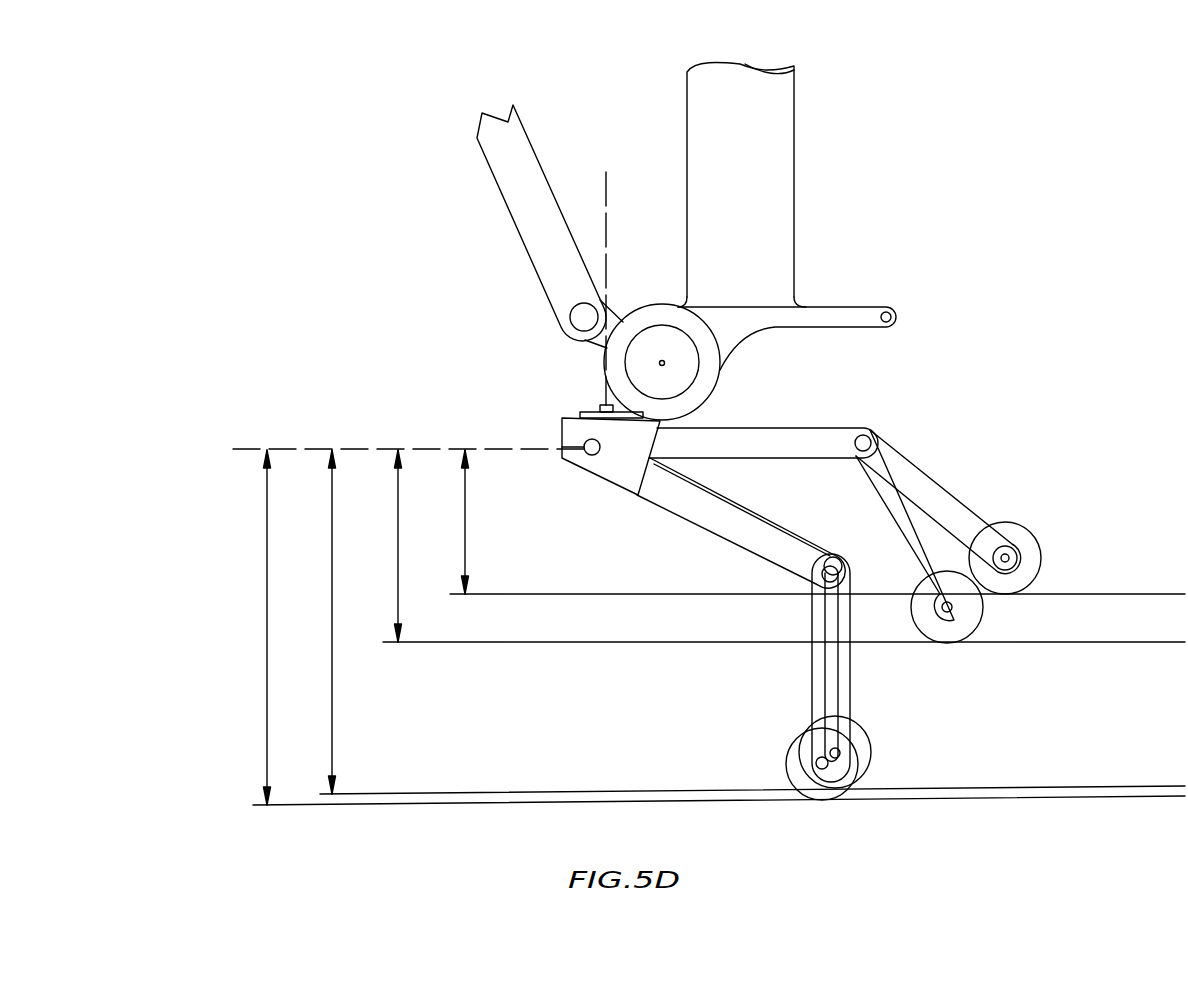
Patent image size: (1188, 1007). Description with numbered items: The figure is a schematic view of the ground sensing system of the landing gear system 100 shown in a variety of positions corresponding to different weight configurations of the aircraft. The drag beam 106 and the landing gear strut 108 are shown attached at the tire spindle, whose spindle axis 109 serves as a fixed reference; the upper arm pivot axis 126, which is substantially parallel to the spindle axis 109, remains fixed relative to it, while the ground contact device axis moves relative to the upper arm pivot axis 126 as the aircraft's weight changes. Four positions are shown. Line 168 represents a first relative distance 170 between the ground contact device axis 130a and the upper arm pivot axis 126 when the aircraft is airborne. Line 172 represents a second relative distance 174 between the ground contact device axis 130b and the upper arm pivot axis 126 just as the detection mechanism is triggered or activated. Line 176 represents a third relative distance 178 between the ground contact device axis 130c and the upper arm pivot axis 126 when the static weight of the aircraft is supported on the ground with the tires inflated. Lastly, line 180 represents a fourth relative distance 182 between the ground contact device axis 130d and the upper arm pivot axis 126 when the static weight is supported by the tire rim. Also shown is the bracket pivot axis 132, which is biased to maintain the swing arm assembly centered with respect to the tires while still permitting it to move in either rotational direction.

The landing gear system 100 is at (340, 177).
The drag beam 106 is at (522, 240).
The landing gear strut 108 is at (795, 143).
The spindle axis 109 is at (664, 366).
The upper arm pivot axis 126 is at (562, 440).
The ground contact device axis 130a is at (818, 762).
The ground contact device axis 130b is at (838, 751).
The ground contact device axis 130c is at (957, 607).
The ground contact device axis 130d is at (1010, 557).
The bracket pivot axis 132 is at (608, 250).
The line 168 is at (457, 805).
The first relative distance 170 is at (268, 627).
The line 172 is at (493, 792).
The second relative distance 174 is at (333, 622).
The line 176 is at (483, 642).
The third relative distance 178 is at (400, 546).
The line 180 is at (556, 594).
The fourth relative distance 182 is at (465, 522).